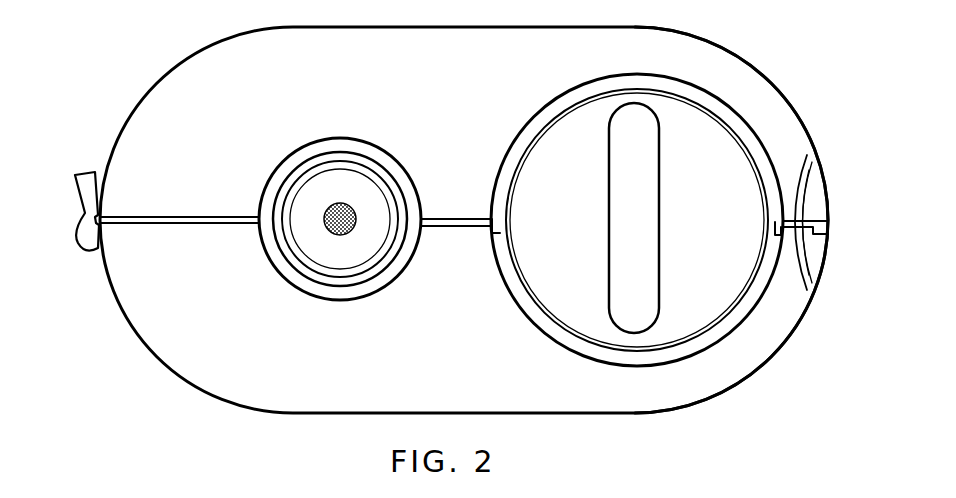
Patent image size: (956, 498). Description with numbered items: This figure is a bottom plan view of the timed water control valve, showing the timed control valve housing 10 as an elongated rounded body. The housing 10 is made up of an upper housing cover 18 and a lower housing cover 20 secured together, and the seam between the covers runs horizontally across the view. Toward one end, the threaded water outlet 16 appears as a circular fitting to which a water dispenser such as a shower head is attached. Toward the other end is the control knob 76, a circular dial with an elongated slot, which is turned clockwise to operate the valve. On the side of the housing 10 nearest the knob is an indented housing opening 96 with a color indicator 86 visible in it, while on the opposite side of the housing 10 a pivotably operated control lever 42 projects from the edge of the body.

The timed control valve housing 10 is at (102, 41).
The water outlet 16 is at (325, 182).
The upper housing cover 18 is at (789, 141).
The lower housing cover 20 is at (806, 334).
The control lever 42 is at (78, 194).
The control knob 76 is at (653, 120).
The color indicator 86 is at (822, 223).
The indented housing opening 96 is at (826, 260).